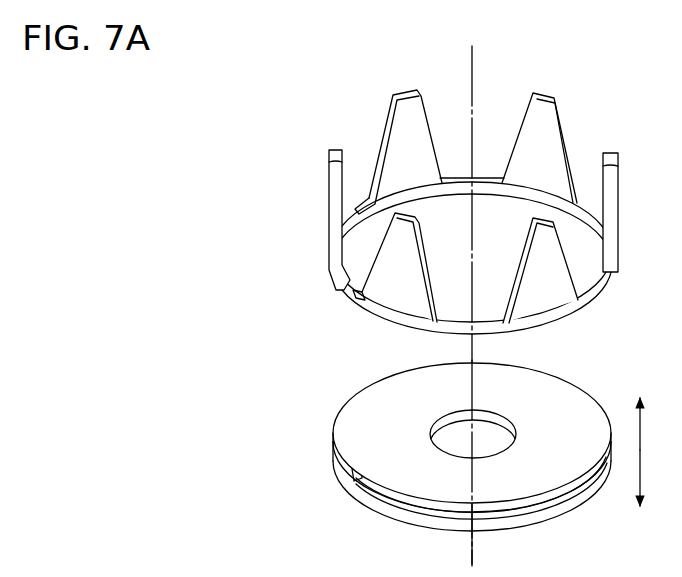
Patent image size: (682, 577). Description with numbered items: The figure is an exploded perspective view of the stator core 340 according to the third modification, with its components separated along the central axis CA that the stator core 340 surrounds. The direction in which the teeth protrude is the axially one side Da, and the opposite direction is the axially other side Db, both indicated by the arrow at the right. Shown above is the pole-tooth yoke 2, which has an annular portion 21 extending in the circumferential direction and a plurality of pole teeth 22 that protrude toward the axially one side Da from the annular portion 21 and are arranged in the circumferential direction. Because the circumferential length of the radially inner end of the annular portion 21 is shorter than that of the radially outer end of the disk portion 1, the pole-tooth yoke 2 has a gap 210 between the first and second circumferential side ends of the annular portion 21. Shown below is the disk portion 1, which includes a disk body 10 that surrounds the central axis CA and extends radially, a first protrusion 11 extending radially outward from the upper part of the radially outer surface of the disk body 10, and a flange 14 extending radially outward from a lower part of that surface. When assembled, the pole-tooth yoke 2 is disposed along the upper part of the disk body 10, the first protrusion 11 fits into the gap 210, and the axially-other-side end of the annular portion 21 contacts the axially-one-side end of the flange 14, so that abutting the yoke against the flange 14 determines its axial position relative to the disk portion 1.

The stator core 340 is at (292, 96).
The pole-tooth yoke 2 is at (268, 115).
The annular portion 21 is at (356, 207).
The pole teeth 22 is at (395, 268).
The gap 210 is at (344, 294).
The disk portion 1 is at (278, 395).
The disk body 10 is at (352, 428).
The first protrusion 11 is at (352, 472).
The flange 14 is at (387, 508).
The central axis CA is at (471, 84).
The axially one side Da is at (641, 408).
The axially other side Db is at (641, 498).